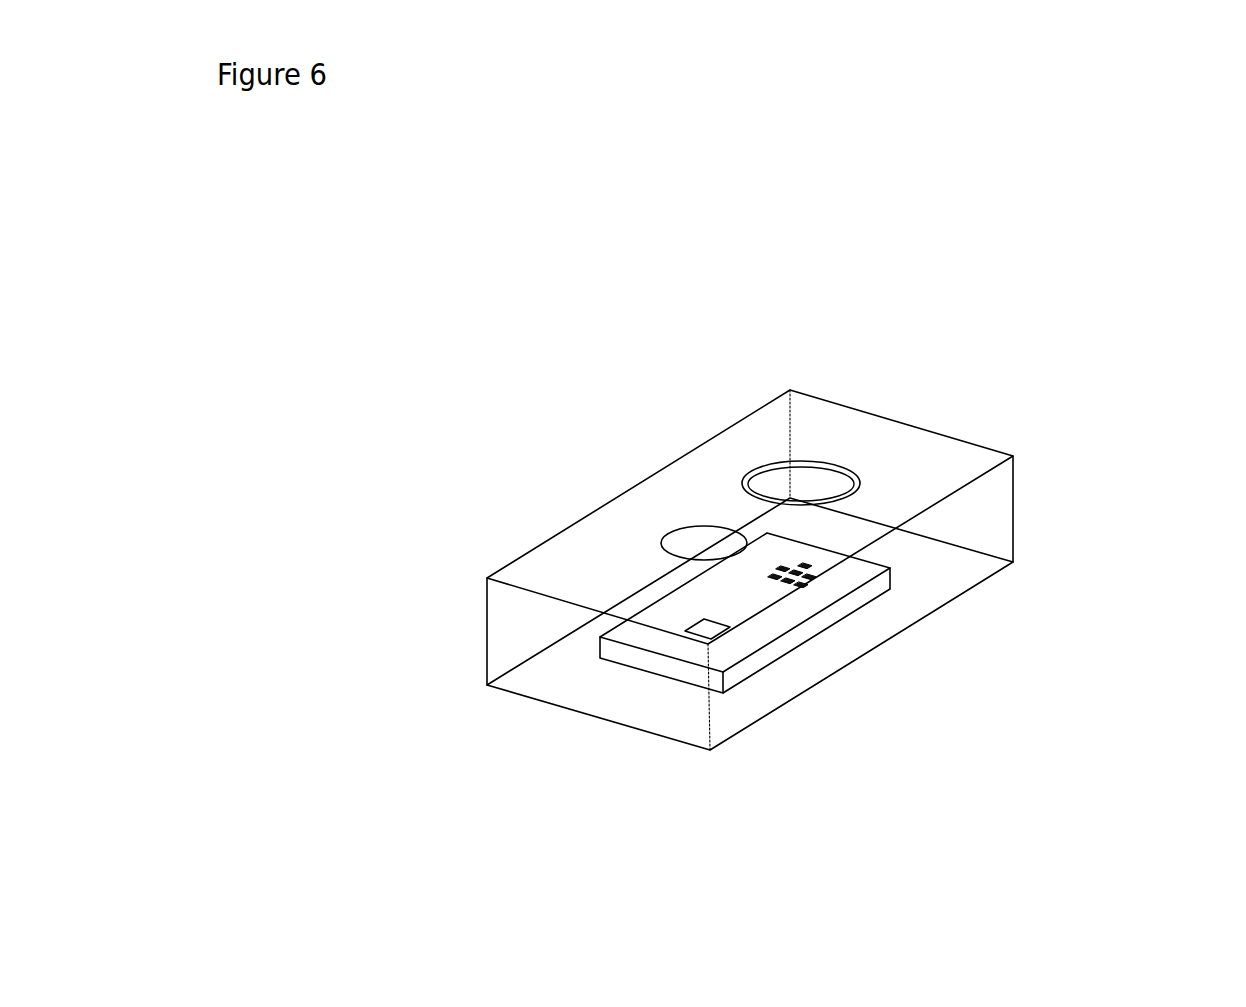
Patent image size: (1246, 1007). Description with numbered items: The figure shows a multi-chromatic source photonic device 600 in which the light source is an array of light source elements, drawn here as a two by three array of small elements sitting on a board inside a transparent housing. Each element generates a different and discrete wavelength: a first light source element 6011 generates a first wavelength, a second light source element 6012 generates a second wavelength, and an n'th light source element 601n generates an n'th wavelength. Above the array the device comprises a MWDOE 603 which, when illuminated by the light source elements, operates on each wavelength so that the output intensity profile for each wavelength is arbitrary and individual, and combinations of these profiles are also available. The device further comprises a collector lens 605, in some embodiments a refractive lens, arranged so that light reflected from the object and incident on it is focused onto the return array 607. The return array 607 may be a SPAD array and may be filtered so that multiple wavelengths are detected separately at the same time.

The multi-chromatic source photonic device 600 is at (342, 320).
The n'th light source element 601n is at (792, 576).
The second light source element 6012 is at (811, 577).
The first light source element 6011 is at (812, 580).
The MWDOE 603 is at (807, 487).
The collector lens 605 is at (698, 544).
The return array 607 is at (712, 628).